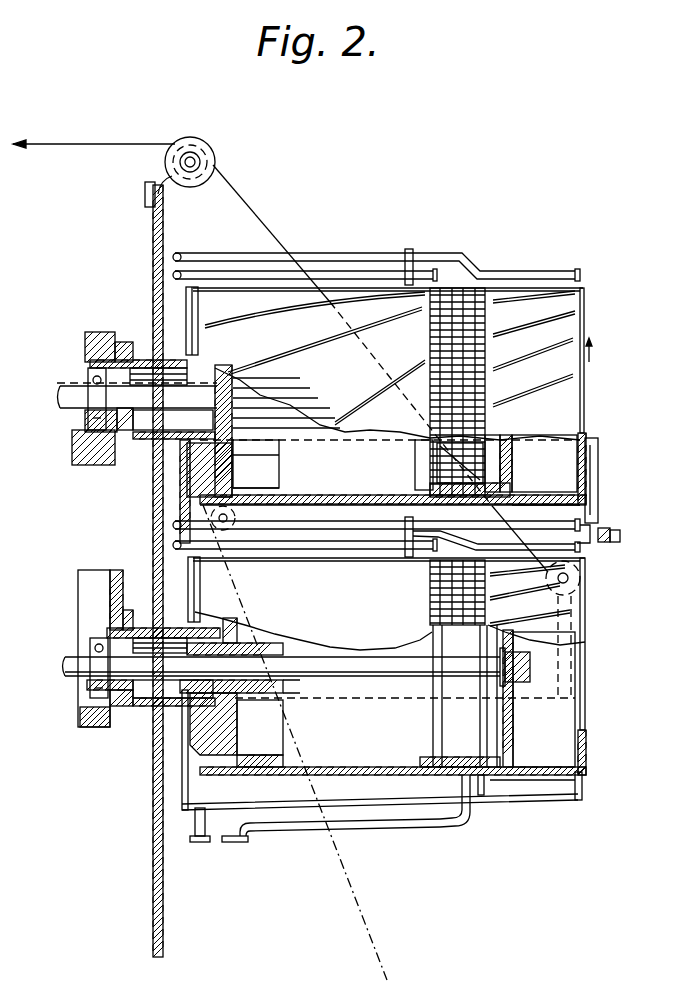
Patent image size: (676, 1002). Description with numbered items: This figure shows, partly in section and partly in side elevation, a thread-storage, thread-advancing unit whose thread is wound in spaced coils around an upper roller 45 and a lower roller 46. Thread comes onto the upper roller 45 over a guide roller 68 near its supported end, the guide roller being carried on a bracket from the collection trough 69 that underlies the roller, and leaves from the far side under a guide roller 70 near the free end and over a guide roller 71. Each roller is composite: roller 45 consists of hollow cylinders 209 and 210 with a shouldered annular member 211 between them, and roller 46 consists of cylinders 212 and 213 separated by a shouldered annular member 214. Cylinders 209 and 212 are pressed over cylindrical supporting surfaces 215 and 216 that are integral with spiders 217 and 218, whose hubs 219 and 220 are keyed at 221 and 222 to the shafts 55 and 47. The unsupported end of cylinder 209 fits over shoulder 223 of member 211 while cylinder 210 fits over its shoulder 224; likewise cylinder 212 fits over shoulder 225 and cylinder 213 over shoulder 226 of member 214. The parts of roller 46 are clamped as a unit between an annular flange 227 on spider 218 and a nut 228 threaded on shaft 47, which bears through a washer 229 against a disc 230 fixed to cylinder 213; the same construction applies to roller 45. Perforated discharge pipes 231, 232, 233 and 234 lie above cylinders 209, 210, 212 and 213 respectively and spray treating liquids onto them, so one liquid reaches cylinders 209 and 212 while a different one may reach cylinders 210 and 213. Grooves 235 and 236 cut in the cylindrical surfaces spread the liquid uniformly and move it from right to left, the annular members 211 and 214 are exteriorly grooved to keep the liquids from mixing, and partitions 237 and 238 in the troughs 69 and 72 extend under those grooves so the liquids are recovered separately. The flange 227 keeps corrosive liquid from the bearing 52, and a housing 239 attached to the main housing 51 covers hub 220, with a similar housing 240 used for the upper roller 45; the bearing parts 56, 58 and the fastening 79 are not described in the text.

The upper roller 45 is at (588, 380).
The lower roller 46 is at (590, 636).
The shaft 47 is at (65, 664).
The main housing 51 is at (95, 735).
The bearing 52 is at (92, 682).
The shaft 55 is at (72, 388).
The upper collar 56 is at (92, 405).
The upper bearing housing 58 is at (95, 466).
The guide roller 68 is at (236, 518).
The collection trough 69 is at (598, 482).
The guide roller 70 is at (582, 584).
The guide roller 71 is at (210, 158).
The trough 72 is at (580, 790).
The bolt 79 is at (604, 543).
The hollow cylinder 209 is at (390, 513).
The hollow cylinder 210 is at (546, 511).
The shouldered annular member 211 is at (452, 288).
The hollow cylinder 212 is at (374, 815).
The hollow cylinder 213 is at (535, 793).
The shouldered annular member 214 is at (482, 795).
The cylindrical supporting surface 215 is at (283, 480).
The cylindrical supporting surface 216 is at (258, 757).
The spider 217 is at (280, 470).
The spider 218 is at (265, 722).
The hub 219 is at (278, 442).
The hub 220 is at (290, 690).
The key 221 is at (180, 352).
The key 222 is at (193, 640).
The shoulder 223 is at (415, 490).
The shoulder 224 is at (512, 490).
The shoulder 225 is at (425, 767).
The shoulder 226 is at (515, 760).
The annular flange 227 is at (195, 792).
The nut 228 is at (525, 667).
The washer 229 is at (518, 688).
The disc 230 is at (513, 720).
The discharge pipe 231 is at (338, 263).
The discharge pipe 232 is at (478, 265).
The discharge pipe 233 is at (378, 548).
The discharge pipe 234 is at (458, 542).
The groove 235 is at (580, 305).
The groove 236 is at (403, 368).
The partition 237 is at (476, 531).
The partition 238 is at (466, 808).
The housing 239 is at (150, 710).
The housing 240 is at (146, 440).